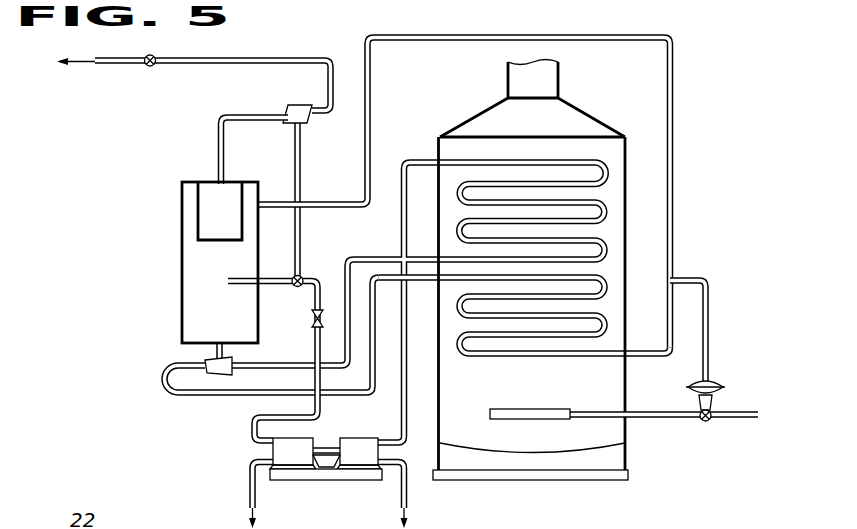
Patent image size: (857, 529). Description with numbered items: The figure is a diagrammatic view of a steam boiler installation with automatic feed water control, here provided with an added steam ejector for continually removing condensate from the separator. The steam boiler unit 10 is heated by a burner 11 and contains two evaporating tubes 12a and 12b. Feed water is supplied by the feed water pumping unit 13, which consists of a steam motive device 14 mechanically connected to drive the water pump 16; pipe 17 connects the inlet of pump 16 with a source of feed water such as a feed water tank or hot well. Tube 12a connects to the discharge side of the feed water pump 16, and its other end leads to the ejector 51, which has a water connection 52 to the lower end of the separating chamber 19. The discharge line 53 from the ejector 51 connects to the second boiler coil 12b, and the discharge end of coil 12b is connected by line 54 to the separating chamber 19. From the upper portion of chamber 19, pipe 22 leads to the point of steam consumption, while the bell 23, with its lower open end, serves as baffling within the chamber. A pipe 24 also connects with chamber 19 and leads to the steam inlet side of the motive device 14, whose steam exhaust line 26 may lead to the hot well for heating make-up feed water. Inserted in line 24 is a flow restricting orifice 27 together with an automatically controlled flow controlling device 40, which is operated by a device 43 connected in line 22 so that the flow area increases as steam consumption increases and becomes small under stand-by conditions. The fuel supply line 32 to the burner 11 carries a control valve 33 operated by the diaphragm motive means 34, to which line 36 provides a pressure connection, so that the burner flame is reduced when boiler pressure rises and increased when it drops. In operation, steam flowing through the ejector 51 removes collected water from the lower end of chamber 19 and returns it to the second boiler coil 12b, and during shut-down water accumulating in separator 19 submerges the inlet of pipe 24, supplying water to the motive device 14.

The steam boiler unit 10 is at (480, 114).
The burner 11 is at (563, 408).
The evaporating tube 12a is at (607, 205).
The second boiler coil 12b is at (495, 355).
The feed water pumping unit 13 is at (325, 480).
The steam motive device 14 is at (308, 438).
The water pump 16 is at (363, 440).
The pipe 17 is at (400, 495).
The separating chamber 19 is at (182, 275).
The pipe 22 is at (218, 136).
The bell 23 is at (198, 228).
The pipe 24 is at (315, 380).
The steam exhaust line 26 is at (250, 495).
The flow restricting orifice 27 is at (310, 320).
The fuel supply line 32 is at (662, 420).
The control valve 33 is at (705, 422).
The diaphragm motive means 34 is at (713, 380).
The line 36 is at (710, 345).
The flow controlling device 40 is at (303, 276).
The device 43 is at (288, 106).
The ejector 51 is at (212, 373).
The water connection 52 is at (215, 350).
The discharge line 53 is at (162, 380).
The line 54 is at (675, 132).